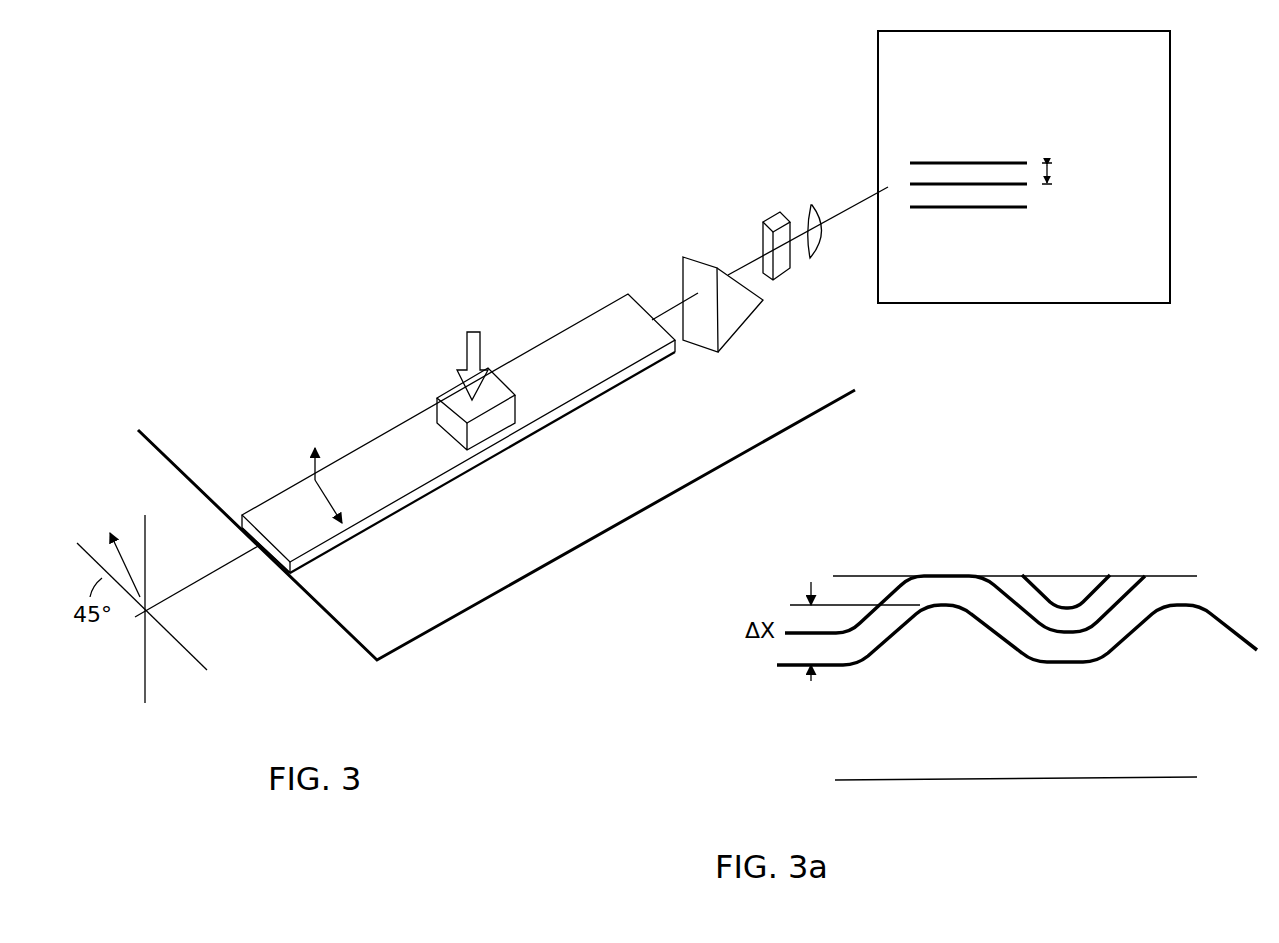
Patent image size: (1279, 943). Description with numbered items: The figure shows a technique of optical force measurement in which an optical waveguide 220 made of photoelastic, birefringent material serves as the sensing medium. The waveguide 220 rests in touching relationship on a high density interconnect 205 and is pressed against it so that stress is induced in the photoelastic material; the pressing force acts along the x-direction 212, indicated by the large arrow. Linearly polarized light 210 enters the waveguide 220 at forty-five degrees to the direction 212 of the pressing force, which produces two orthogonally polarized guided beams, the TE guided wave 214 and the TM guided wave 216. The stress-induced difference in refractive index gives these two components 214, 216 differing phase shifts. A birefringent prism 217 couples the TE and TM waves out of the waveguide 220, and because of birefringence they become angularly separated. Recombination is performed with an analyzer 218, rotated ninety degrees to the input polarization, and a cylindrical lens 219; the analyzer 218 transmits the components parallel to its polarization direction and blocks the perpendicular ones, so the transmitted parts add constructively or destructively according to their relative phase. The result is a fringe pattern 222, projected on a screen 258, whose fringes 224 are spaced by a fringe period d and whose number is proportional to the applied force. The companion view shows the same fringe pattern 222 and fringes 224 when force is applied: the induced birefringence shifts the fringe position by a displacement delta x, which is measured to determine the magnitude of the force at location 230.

In FIG. 3, the high density interconnect 205 is at (368, 628).
In FIG. 3, the linearly polarized light 210 is at (122, 520).
In FIG. 3, the direction of the pressing force 212 is at (482, 340).
In FIG. 3, the TE guided wave 214 is at (313, 460).
In FIG. 3, the TM guided wave 216 is at (350, 533).
In FIG. 3, the birefringent prism 217 is at (748, 320).
In FIG. 3, the analyzer 218 is at (770, 218).
In FIG. 3, the cylindrical lens 219 is at (815, 205).
In FIG. 3, the optical waveguide 220 is at (408, 413).
In FIG. 3, the fringe pattern 222 is at (1024, 204).
In FIG. 3A, the fringe pattern 222 is at (1017, 563).
In FIG. 3, the fringes 224 is at (977, 182).
In FIG. 3A, the fringes 224 is at (997, 583).
In FIG. 3A, the location 230 is at (922, 782).
In FIG. 3, the screen 258 is at (997, 27).